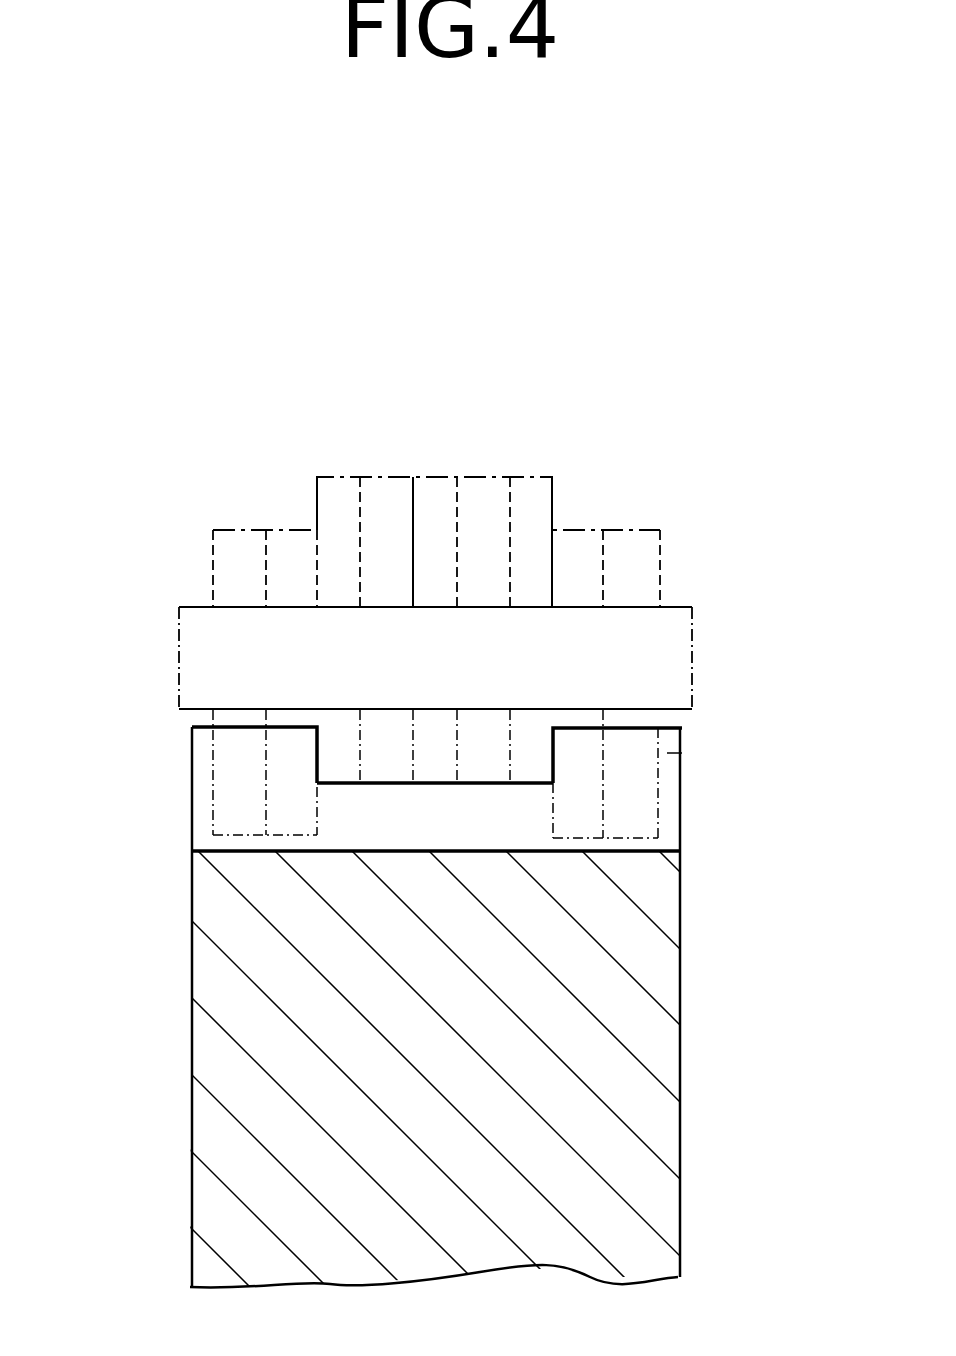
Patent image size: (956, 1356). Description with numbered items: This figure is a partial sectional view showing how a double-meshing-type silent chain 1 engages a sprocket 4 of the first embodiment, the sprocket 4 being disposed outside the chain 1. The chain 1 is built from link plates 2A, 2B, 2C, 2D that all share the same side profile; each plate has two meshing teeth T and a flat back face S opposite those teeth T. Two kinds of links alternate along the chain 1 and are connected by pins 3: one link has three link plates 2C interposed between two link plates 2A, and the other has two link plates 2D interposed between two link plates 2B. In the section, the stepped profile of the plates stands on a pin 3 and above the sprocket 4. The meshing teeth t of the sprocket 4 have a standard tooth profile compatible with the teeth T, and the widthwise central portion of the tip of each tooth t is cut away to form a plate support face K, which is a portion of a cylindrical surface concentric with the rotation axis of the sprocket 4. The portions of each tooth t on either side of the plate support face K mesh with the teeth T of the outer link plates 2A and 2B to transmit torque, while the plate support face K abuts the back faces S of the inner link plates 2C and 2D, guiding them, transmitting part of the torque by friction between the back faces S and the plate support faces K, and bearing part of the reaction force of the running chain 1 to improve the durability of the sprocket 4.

The double-meshing-type silent chain 1 is at (690, 546).
The link plate 2A is at (238, 528).
The link plate 2B is at (292, 530).
The link plate 2C is at (333, 477).
The link plate 2D is at (387, 477).
The pin 3 is at (680, 634).
The sprocket 4 is at (692, 1084).
The back face S is at (382, 783).
The meshing teeth T is at (290, 825).
The plate support face K is at (465, 783).
The meshing teeth t is at (682, 753).